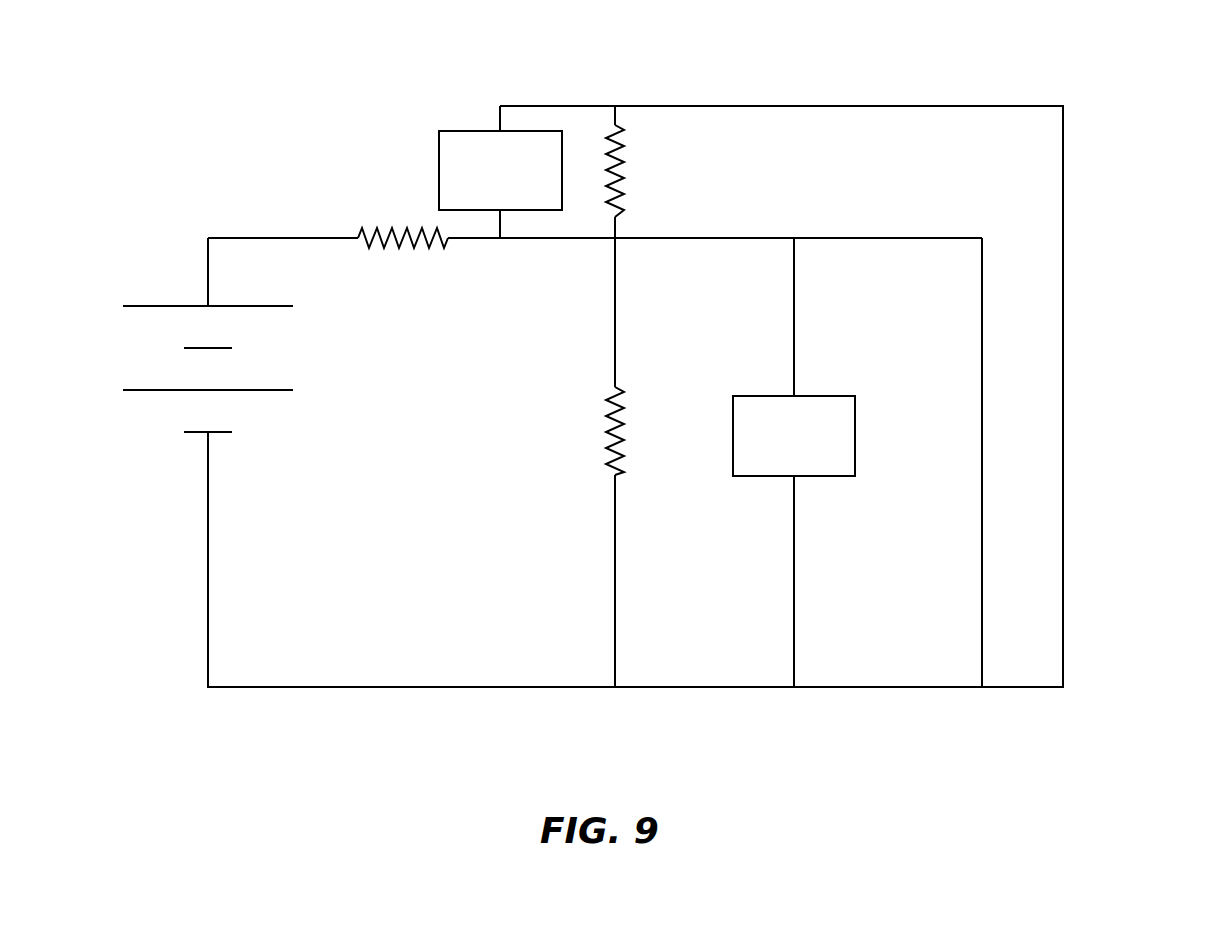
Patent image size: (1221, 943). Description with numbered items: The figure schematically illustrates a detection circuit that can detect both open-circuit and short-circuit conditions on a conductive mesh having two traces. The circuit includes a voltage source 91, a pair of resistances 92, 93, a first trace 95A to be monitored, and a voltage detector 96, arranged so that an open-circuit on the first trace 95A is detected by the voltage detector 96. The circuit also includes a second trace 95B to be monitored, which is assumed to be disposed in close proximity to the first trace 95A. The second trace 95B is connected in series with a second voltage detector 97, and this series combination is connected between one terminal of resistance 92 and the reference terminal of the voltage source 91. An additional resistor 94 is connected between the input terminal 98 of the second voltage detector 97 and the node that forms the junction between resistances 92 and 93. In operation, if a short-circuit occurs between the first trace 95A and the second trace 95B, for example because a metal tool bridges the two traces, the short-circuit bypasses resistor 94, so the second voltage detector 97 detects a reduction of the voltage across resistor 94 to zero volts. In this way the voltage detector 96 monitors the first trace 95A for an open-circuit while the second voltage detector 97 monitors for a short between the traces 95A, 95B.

The voltage source 91 is at (172, 392).
The resistance 92 is at (388, 230).
The resistance 93 is at (608, 432).
The resistor 94 is at (623, 167).
The first trace 95A is at (982, 568).
The second trace 95B is at (1063, 507).
The voltage detector 96 is at (821, 395).
The second voltage detector 97 is at (438, 157).
The input terminal 98 is at (508, 105).